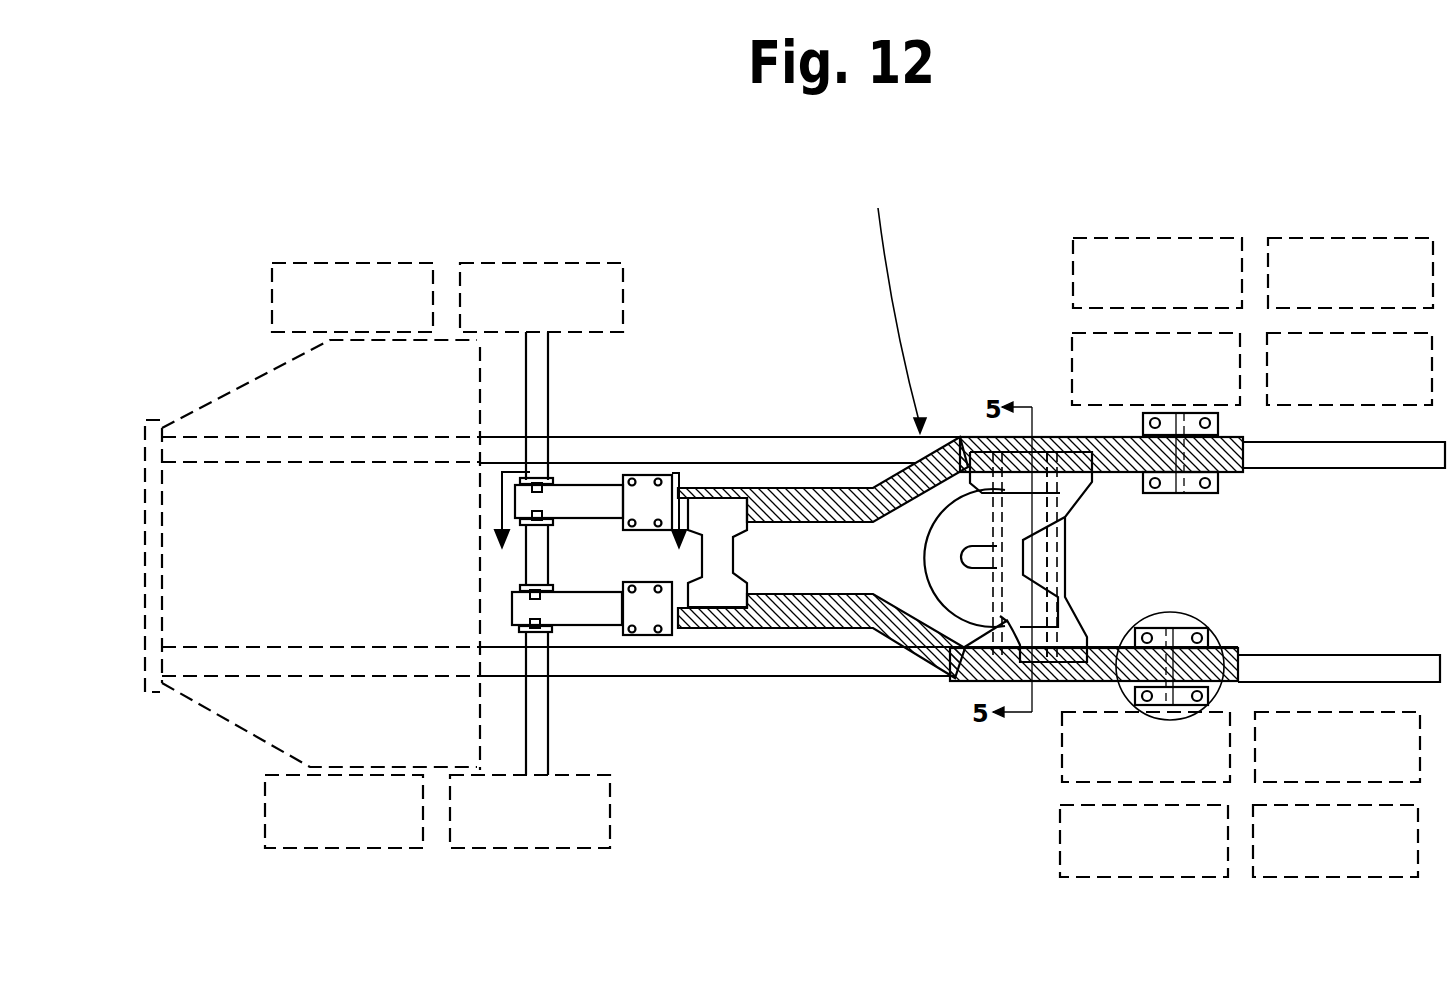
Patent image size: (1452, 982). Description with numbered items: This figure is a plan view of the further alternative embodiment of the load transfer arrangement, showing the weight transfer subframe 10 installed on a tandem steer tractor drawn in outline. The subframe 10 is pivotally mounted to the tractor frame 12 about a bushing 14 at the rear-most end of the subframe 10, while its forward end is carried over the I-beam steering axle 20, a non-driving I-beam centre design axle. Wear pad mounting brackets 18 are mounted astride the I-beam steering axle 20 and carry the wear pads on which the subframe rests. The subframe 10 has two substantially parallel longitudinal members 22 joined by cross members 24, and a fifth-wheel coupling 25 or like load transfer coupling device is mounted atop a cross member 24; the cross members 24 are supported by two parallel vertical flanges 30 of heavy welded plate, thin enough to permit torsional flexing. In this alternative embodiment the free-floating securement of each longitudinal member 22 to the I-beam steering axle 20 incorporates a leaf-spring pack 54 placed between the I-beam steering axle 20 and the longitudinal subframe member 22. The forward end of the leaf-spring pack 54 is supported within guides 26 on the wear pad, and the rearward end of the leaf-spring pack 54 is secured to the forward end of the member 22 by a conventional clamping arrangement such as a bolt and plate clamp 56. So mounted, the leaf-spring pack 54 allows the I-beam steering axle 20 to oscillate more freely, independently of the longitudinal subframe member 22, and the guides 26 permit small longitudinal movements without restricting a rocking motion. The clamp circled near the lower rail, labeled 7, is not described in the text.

The clamp plate 7 is at (1130, 700).
The subframe 10 is at (890, 306).
The tractor frame 12 is at (742, 446).
The bushing 14 is at (588, 525).
The wear pad mounting brackets 18 is at (560, 490).
The I-beam steering axle 20 is at (547, 482).
The longitudinal members 22 is at (783, 500).
The cross members 24 is at (740, 489).
The fifth-wheel coupling 25 is at (1048, 480).
The guides 26 is at (545, 630).
The vertical flanges 30 is at (1005, 620).
The leaf-spring pack 54 is at (533, 487).
The bolt and plate clamp 56 is at (640, 492).